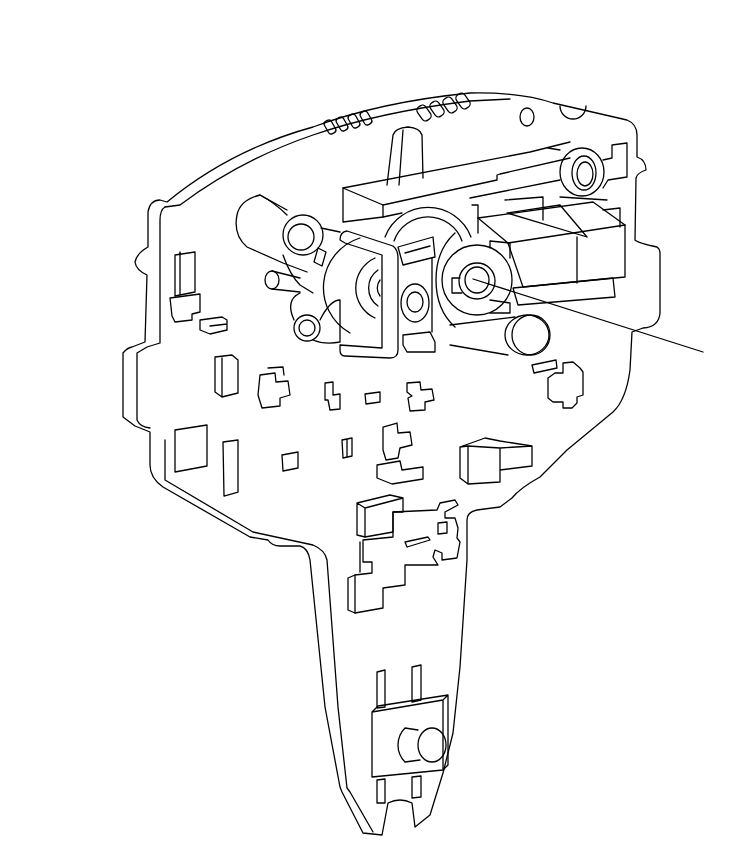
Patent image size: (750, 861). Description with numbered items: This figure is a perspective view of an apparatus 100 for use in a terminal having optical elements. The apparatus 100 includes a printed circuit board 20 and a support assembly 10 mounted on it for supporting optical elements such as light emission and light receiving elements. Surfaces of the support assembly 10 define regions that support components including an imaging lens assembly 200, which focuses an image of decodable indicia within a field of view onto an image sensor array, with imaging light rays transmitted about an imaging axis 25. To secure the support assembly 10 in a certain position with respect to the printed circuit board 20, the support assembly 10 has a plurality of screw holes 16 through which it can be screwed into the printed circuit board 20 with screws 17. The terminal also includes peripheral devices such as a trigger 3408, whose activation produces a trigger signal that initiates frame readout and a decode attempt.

The apparatus 100 is at (400, 78).
The support assembly 10 is at (533, 158).
The screw holes 16 is at (297, 233).
The screws 17 is at (550, 337).
The printed circuit board 20 is at (557, 447).
The imaging axis 25 is at (667, 338).
The imaging lens assembly 200 is at (474, 312).
The trigger 3408 is at (447, 745).